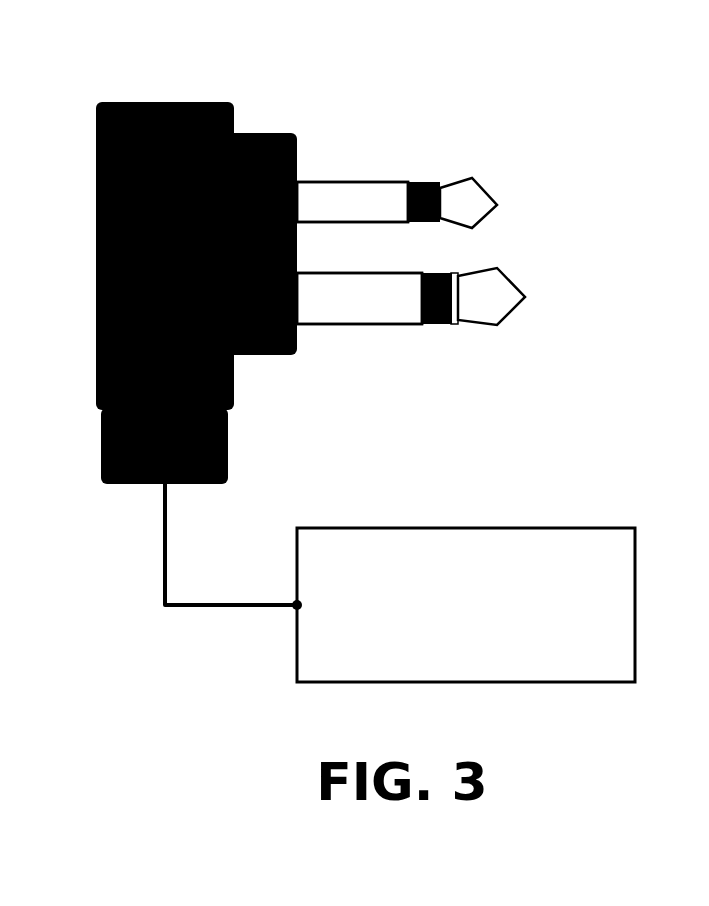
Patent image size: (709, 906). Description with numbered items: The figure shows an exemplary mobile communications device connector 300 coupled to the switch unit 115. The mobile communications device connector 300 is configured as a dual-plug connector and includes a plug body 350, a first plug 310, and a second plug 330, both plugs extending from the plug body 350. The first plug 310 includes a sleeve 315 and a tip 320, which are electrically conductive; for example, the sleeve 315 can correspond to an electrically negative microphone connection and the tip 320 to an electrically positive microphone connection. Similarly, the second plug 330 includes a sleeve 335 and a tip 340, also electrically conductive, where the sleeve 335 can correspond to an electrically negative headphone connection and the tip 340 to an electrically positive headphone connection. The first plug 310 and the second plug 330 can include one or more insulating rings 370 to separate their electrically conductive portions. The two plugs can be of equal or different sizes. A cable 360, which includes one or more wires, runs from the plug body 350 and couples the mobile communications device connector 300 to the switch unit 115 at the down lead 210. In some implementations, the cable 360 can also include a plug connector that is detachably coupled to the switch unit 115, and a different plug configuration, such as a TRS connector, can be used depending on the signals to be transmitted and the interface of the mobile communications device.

The mobile communications device connector 300 is at (152, 103).
The plug body 350 is at (228, 437).
The first plug 310 is at (318, 181).
The sleeve 315 is at (365, 203).
The tip 320 is at (475, 193).
The insulating rings 370 is at (427, 221).
The second plug 330 is at (308, 327).
The sleeve 335 is at (365, 310).
The tip 340 is at (497, 312).
The cable 360 is at (163, 606).
The down lead 210 is at (300, 607).
The switch unit 115 is at (636, 612).